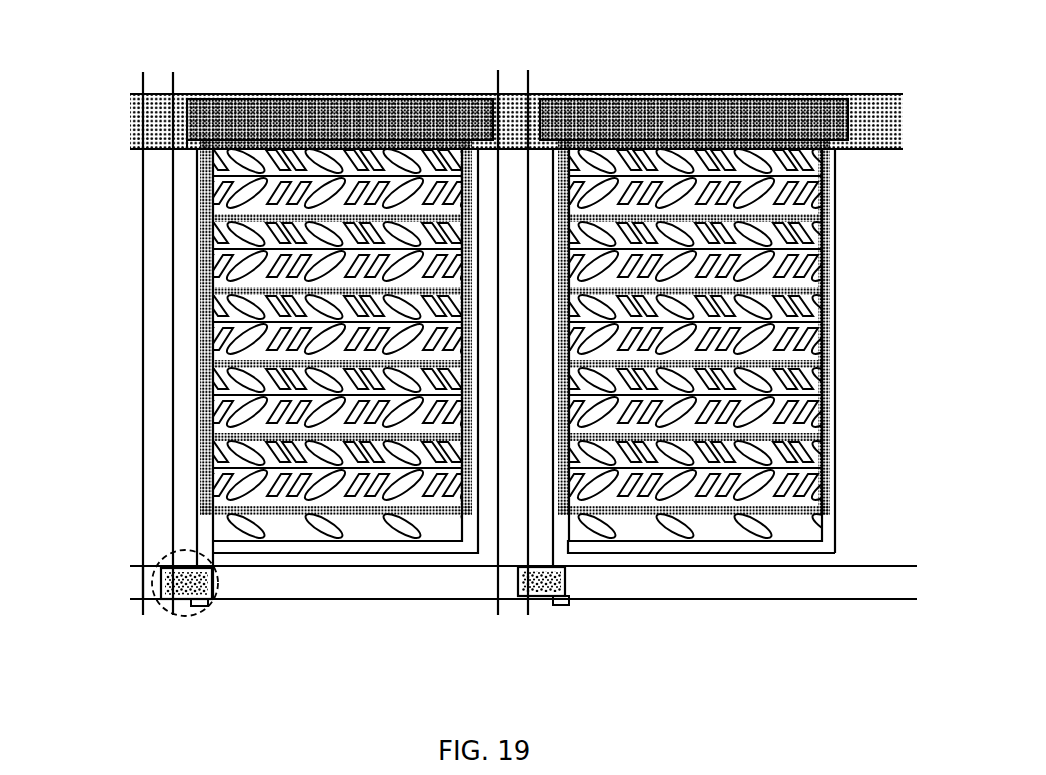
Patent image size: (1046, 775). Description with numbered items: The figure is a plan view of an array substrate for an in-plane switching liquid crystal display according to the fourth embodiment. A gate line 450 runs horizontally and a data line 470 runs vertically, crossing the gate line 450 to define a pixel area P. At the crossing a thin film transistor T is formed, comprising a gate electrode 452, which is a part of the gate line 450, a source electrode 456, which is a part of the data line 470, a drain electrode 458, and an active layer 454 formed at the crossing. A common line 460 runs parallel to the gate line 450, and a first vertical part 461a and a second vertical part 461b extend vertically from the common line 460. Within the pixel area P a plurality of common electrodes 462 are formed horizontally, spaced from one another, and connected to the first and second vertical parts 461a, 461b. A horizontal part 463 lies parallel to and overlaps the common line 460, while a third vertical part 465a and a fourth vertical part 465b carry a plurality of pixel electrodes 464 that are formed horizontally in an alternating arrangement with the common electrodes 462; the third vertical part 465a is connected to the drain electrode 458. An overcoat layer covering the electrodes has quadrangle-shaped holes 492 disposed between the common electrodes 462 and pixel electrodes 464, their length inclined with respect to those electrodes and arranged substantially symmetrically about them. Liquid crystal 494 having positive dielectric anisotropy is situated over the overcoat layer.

The gate line 450 is at (292, 600).
The gate electrode 452 is at (182, 613).
The active layer 454 is at (157, 565).
The source electrode 456 is at (147, 585).
The drain electrode 458 is at (213, 605).
The common line 460 is at (593, 93).
The first vertical part 461a is at (557, 160).
The second vertical part 461b is at (833, 194).
The common electrodes 462 is at (823, 229).
The horizontal part 463 is at (693, 93).
The pixel electrodes 464 is at (786, 553).
The third vertical part 465a is at (552, 525).
The fourth vertical part 465b is at (835, 510).
The data line 470 is at (165, 237).
The holes 492 is at (818, 340).
The liquid crystal 494 is at (782, 267).
The pixel area P is at (711, 343).
The thin film transistor T is at (198, 603).